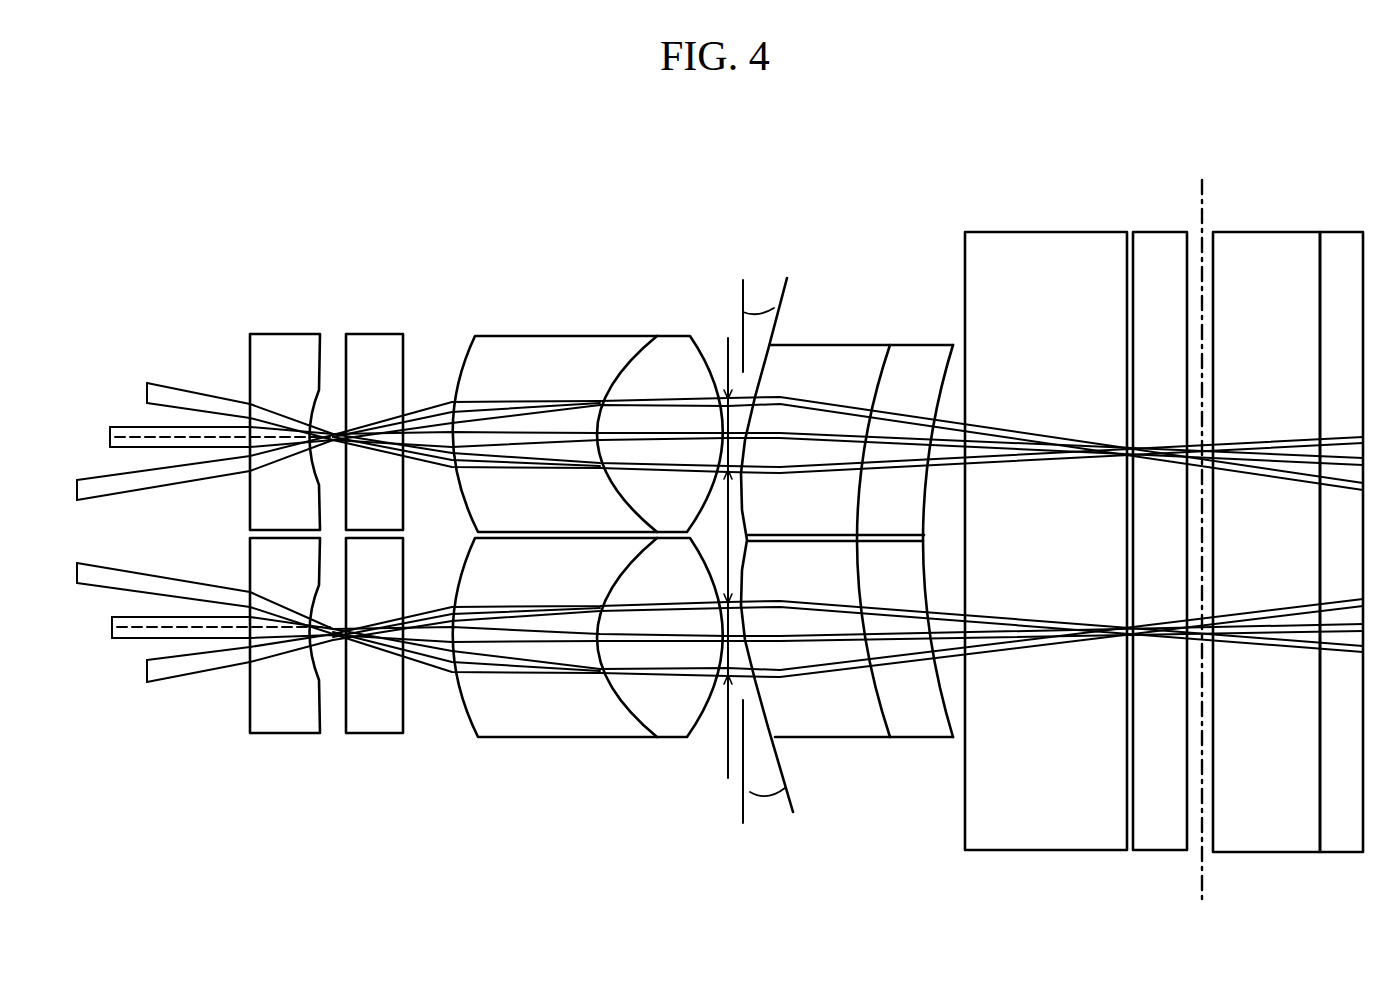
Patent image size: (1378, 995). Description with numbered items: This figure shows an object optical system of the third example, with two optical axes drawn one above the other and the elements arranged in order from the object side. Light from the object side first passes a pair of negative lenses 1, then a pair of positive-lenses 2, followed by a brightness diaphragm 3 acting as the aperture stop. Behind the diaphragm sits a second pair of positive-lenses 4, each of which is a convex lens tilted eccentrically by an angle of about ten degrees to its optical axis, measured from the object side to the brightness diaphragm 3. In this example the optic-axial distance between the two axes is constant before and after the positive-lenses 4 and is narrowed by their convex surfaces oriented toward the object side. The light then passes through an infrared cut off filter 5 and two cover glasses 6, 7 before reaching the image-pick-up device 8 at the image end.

The pair of negative lenses 1 is at (301, 343).
The pair of positive-lenses 2 is at (563, 350).
The brightness diaphragm 3 is at (727, 347).
The second pair of positive-lenses 4 is at (853, 363).
The infrared cut off filter 5 is at (1037, 258).
The cover glass 6 is at (1157, 243).
The cover glass 7 is at (1268, 254).
The image-pick-up device 8 is at (1340, 240).